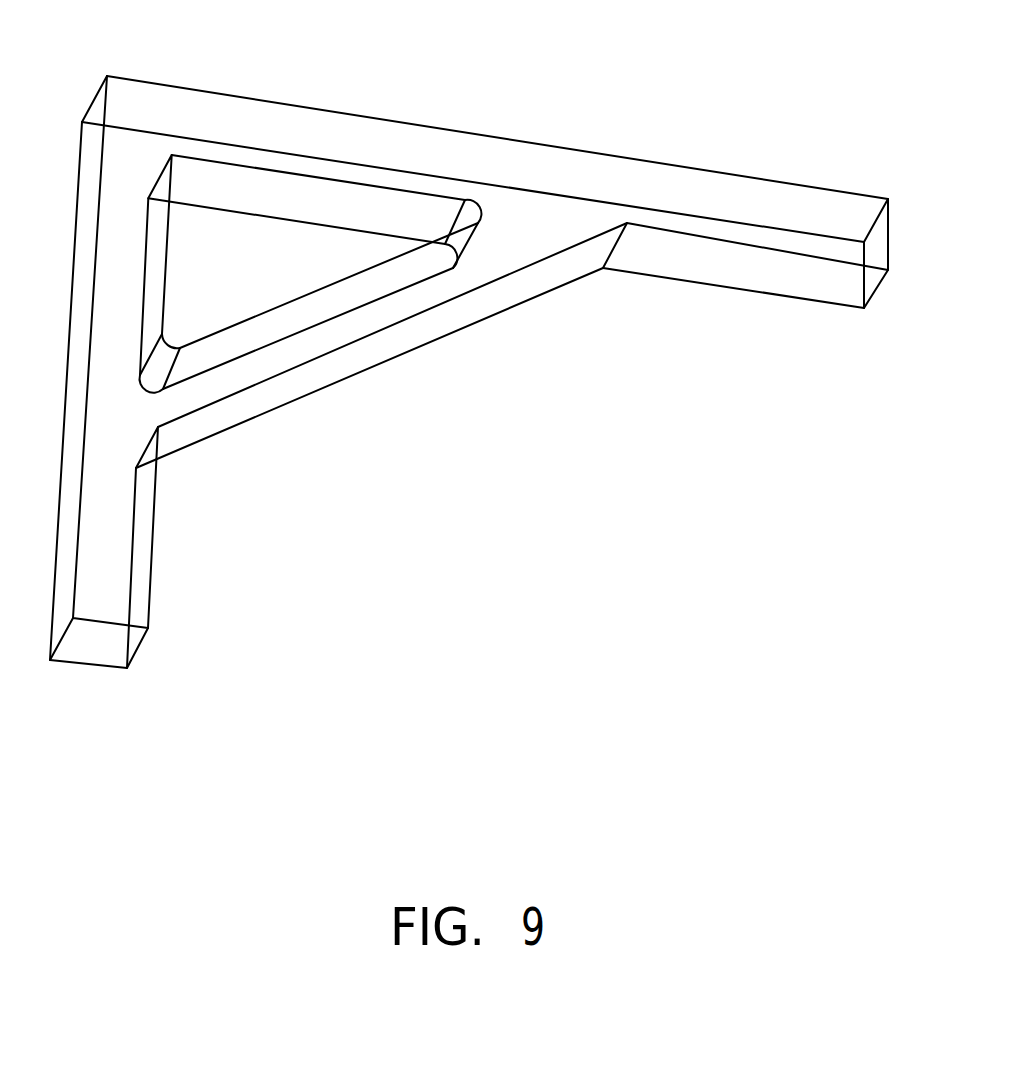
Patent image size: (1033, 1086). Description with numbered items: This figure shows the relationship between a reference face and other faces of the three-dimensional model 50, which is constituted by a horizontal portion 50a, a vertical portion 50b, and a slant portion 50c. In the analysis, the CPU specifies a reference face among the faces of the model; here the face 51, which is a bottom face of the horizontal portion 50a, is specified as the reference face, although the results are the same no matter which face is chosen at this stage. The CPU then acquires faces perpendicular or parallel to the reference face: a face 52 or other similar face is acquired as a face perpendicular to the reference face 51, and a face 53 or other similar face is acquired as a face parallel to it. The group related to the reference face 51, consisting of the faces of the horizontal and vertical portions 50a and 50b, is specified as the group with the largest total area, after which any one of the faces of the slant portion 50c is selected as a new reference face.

The three-dimensional model 50 is at (479, 349).
The horizontal portion 50a is at (492, 200).
The vertical portion 50b is at (170, 552).
The slant portion 50c is at (352, 410).
The face 51 is at (873, 280).
The face 52 is at (823, 197).
The face 53 is at (92, 113).